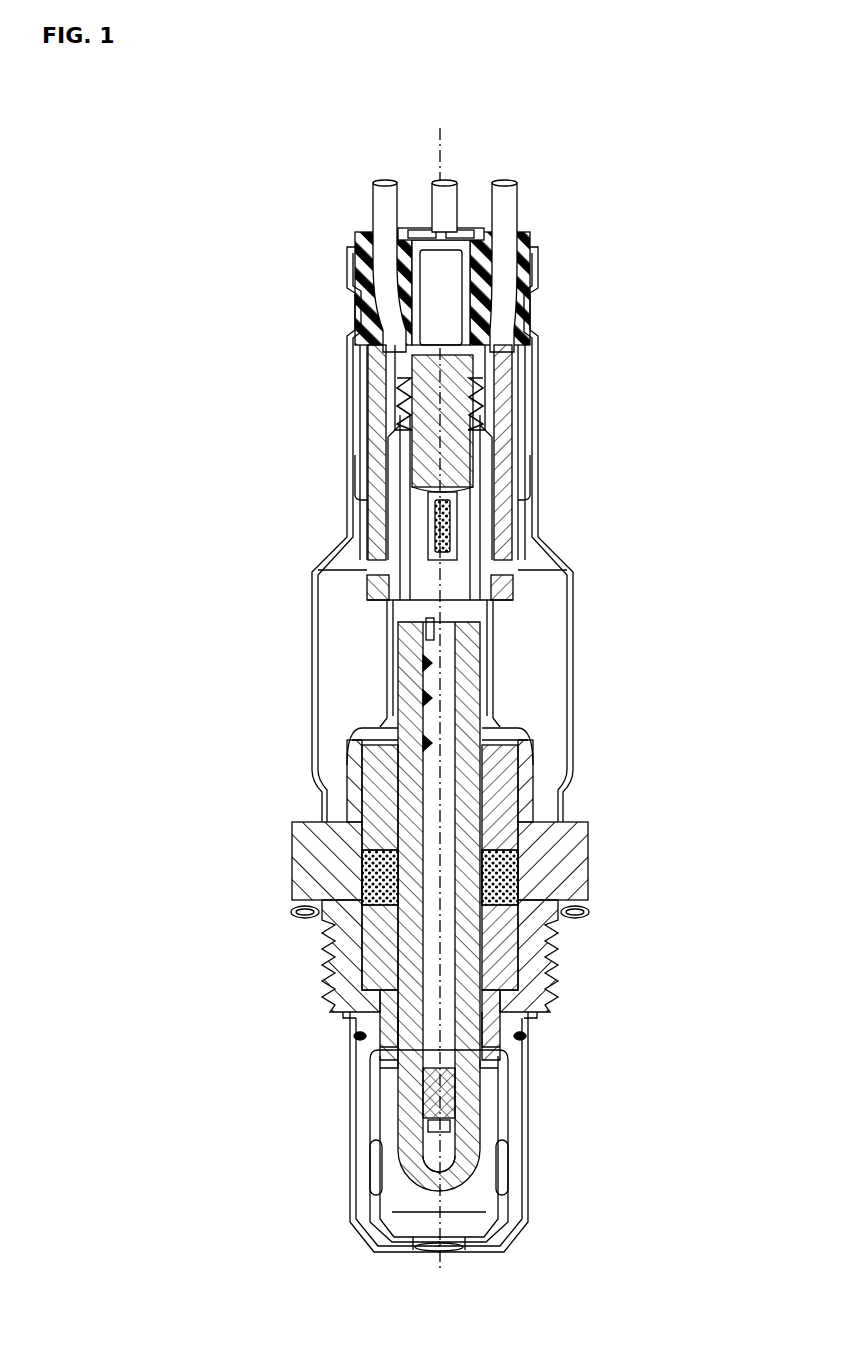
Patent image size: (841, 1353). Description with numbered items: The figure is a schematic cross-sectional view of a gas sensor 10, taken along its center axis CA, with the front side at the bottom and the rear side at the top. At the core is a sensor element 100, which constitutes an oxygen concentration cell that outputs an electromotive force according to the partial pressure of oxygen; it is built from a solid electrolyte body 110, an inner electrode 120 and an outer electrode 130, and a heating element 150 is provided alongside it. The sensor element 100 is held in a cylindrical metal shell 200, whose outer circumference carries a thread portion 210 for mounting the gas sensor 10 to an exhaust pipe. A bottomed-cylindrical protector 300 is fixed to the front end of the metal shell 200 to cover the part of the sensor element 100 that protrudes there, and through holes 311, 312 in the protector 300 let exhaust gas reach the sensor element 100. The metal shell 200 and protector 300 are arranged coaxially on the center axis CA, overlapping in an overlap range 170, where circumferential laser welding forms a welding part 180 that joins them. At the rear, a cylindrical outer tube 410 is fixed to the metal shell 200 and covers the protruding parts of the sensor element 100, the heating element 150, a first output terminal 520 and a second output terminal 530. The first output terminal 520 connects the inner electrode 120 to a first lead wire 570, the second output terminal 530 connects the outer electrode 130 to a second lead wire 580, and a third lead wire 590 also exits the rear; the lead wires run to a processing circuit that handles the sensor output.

The gas sensor 10 is at (596, 177).
The sensor element 100 is at (564, 904).
The solid electrolyte body 110 is at (458, 1080).
The inner electrode 120 is at (455, 1152).
The outer electrode 130 is at (452, 1112).
The heating element 150 is at (398, 1089).
The overlap range 170 is at (538, 1013).
The welding part 180 is at (353, 1037).
The metal shell 200 is at (590, 866).
The thread portion 210 is at (560, 976).
The protector 300 is at (511, 1146).
The through hole 311 is at (508, 1153).
The through hole 312 is at (445, 1252).
The outer tube 410 is at (576, 668).
The first output terminal 520 is at (490, 398).
The second output terminal 530 is at (396, 398).
The first lead wire 570 is at (504, 180).
The second lead wire 580 is at (383, 180).
The third lead wire 590 is at (440, 180).
The center axis CA is at (452, 150).